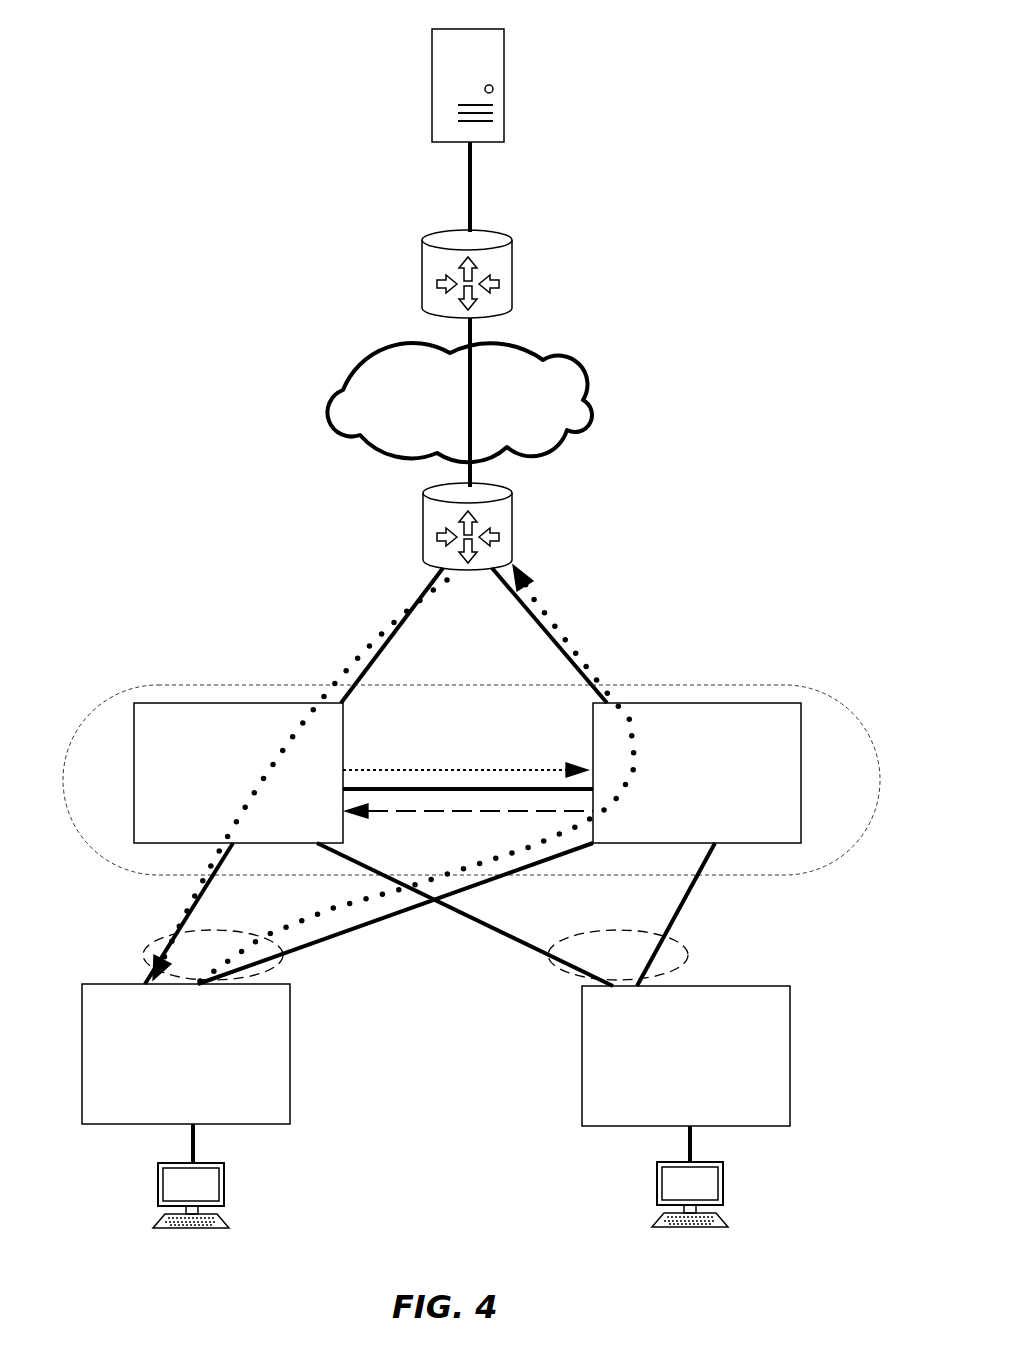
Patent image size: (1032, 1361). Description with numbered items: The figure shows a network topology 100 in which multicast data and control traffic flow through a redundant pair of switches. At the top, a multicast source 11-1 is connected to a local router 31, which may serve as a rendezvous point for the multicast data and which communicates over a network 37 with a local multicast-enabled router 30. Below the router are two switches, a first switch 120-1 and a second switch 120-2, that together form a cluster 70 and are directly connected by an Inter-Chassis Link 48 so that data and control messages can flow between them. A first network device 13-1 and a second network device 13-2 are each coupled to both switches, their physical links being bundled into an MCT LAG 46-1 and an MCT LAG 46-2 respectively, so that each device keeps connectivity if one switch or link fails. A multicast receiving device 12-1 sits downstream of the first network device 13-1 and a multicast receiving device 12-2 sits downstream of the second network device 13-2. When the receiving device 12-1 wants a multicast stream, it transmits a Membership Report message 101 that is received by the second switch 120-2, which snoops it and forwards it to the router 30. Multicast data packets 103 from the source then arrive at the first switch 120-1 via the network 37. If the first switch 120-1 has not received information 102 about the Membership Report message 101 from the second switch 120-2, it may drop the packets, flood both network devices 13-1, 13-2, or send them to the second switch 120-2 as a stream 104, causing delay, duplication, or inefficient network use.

The network topology 100 is at (885, 40).
The multicast source 11-1 is at (455, 17).
The local router 31 is at (488, 274).
The network 37 is at (580, 408).
The local multicast-enabled router 30 is at (467, 542).
The cluster 70 is at (471, 780).
The first switch 120-1 is at (238, 773).
The second switch 120-2 is at (697, 773).
The stream 104 is at (380, 767).
The Inter-Chassis Link 48 is at (487, 789).
The information about the Membership Report message 102 is at (458, 812).
The multicast data packets 103 is at (185, 917).
The Membership Report message 101 is at (389, 896).
The MCT LAG 46-1 is at (270, 973).
The MCT LAG 46-2 is at (548, 960).
The first network device 13-1 is at (186, 1054).
The second network device 13-2 is at (686, 1056).
The multicast receiving device 12-1 is at (172, 1277).
The multicast receiving device 12-2 is at (676, 1278).